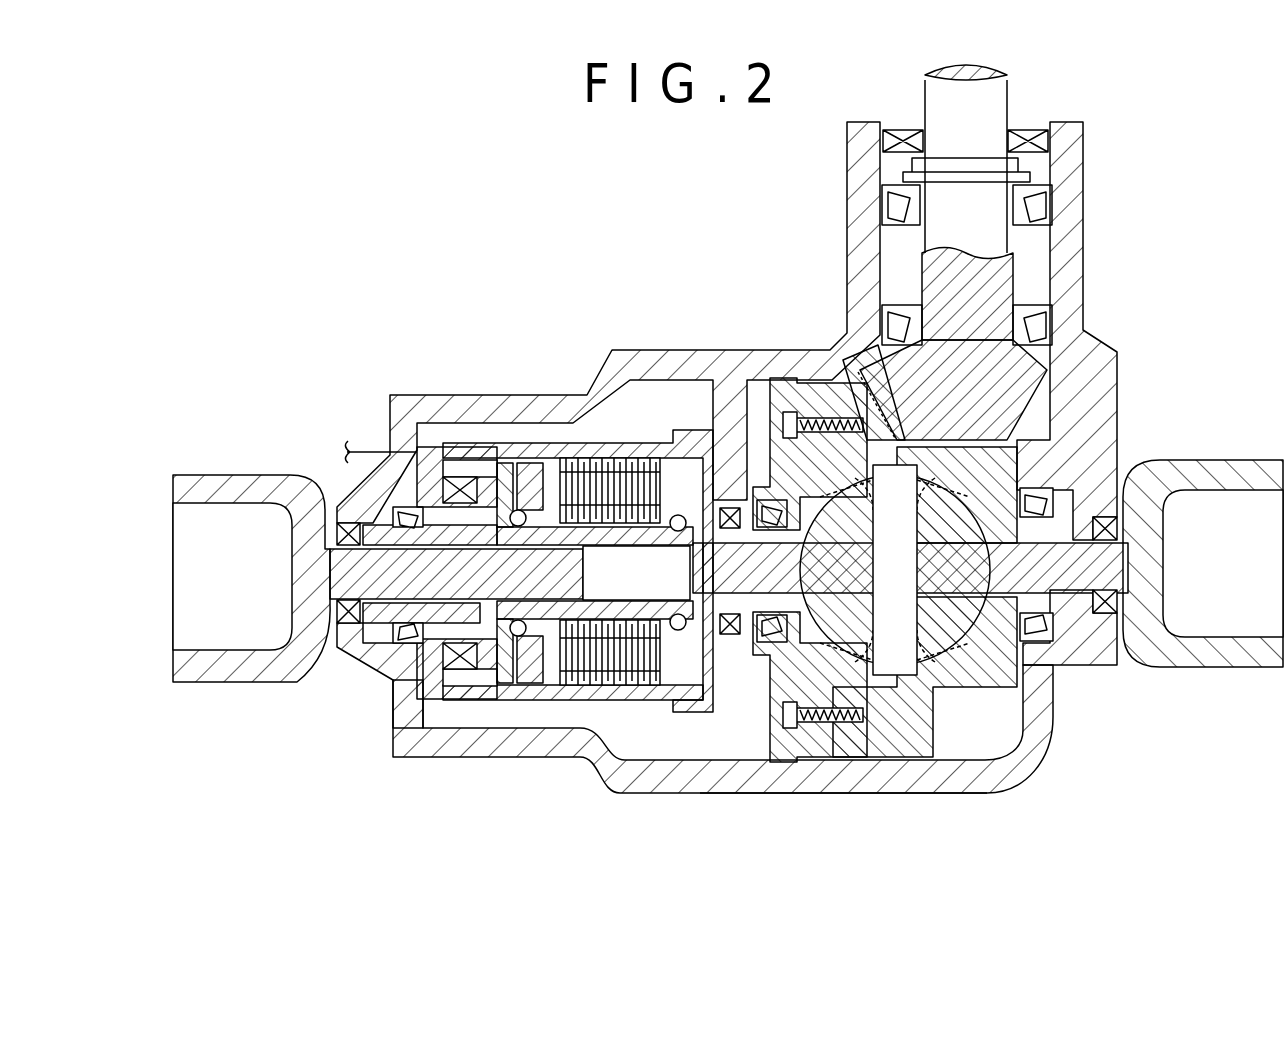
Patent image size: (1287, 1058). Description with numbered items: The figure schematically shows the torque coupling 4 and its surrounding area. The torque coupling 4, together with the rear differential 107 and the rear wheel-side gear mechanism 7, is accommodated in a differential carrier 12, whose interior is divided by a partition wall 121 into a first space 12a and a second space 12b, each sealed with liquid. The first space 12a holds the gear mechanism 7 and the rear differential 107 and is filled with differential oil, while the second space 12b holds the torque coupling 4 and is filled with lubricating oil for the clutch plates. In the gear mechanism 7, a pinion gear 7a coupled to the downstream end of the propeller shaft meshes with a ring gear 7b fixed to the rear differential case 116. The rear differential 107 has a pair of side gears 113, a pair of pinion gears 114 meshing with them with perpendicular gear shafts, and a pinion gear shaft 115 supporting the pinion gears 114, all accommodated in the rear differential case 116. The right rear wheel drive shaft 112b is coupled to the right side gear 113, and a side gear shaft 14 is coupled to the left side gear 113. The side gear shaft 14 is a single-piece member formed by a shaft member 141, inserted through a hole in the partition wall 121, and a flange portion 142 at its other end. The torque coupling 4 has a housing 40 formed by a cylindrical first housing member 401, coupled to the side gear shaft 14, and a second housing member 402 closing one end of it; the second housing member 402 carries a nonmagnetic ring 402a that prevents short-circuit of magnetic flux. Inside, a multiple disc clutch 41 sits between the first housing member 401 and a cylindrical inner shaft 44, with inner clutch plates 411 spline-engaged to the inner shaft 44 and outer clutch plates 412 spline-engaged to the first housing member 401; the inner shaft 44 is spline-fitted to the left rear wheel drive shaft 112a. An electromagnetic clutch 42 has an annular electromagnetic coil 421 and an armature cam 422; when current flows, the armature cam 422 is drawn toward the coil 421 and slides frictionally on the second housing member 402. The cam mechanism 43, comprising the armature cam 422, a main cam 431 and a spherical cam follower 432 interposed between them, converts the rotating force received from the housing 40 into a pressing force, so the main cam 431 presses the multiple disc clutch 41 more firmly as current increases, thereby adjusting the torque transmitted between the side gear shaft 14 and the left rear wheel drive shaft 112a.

The torque coupling 4 is at (567, 437).
The housing 40 is at (664, 437).
The multiple disc clutch 41 is at (684, 297).
The inner clutch plates 411 is at (592, 447).
The outer clutch plates 412 is at (575, 447).
The electromagnetic clutch 42 is at (300, 375).
The electromagnetic coil 421 is at (427, 477).
The armature cam 422 is at (505, 462).
The cam mechanism 43 is at (527, 673).
The main cam 431 is at (552, 683).
The cam follower 432 is at (498, 670).
The inner shaft 44 is at (562, 470).
The first housing member 401 is at (418, 735).
The second housing member 402 is at (440, 682).
The nonmagnetic ring 402a is at (447, 680).
The rear wheel-side gear mechanism 7 is at (1177, 317).
The pinion gear 7a is at (1020, 395).
The ring gear 7b is at (862, 393).
The differential carrier 12 is at (1065, 207).
The first space 12a is at (960, 740).
The second space 12b is at (667, 745).
The side gear shaft 14 is at (710, 727).
The rear differential 107 is at (967, 700).
The left rear wheel drive shaft 112a is at (320, 683).
The right rear wheel drive shaft 112b is at (1045, 617).
The side gears 113 is at (950, 510).
The pinion gears 114 is at (945, 450).
The pinion gear shaft 115 is at (895, 660).
The rear differential case 116 is at (1000, 657).
The partition wall 121 is at (763, 707).
The shaft member 141 is at (770, 515).
The flange portion 142 is at (730, 508).